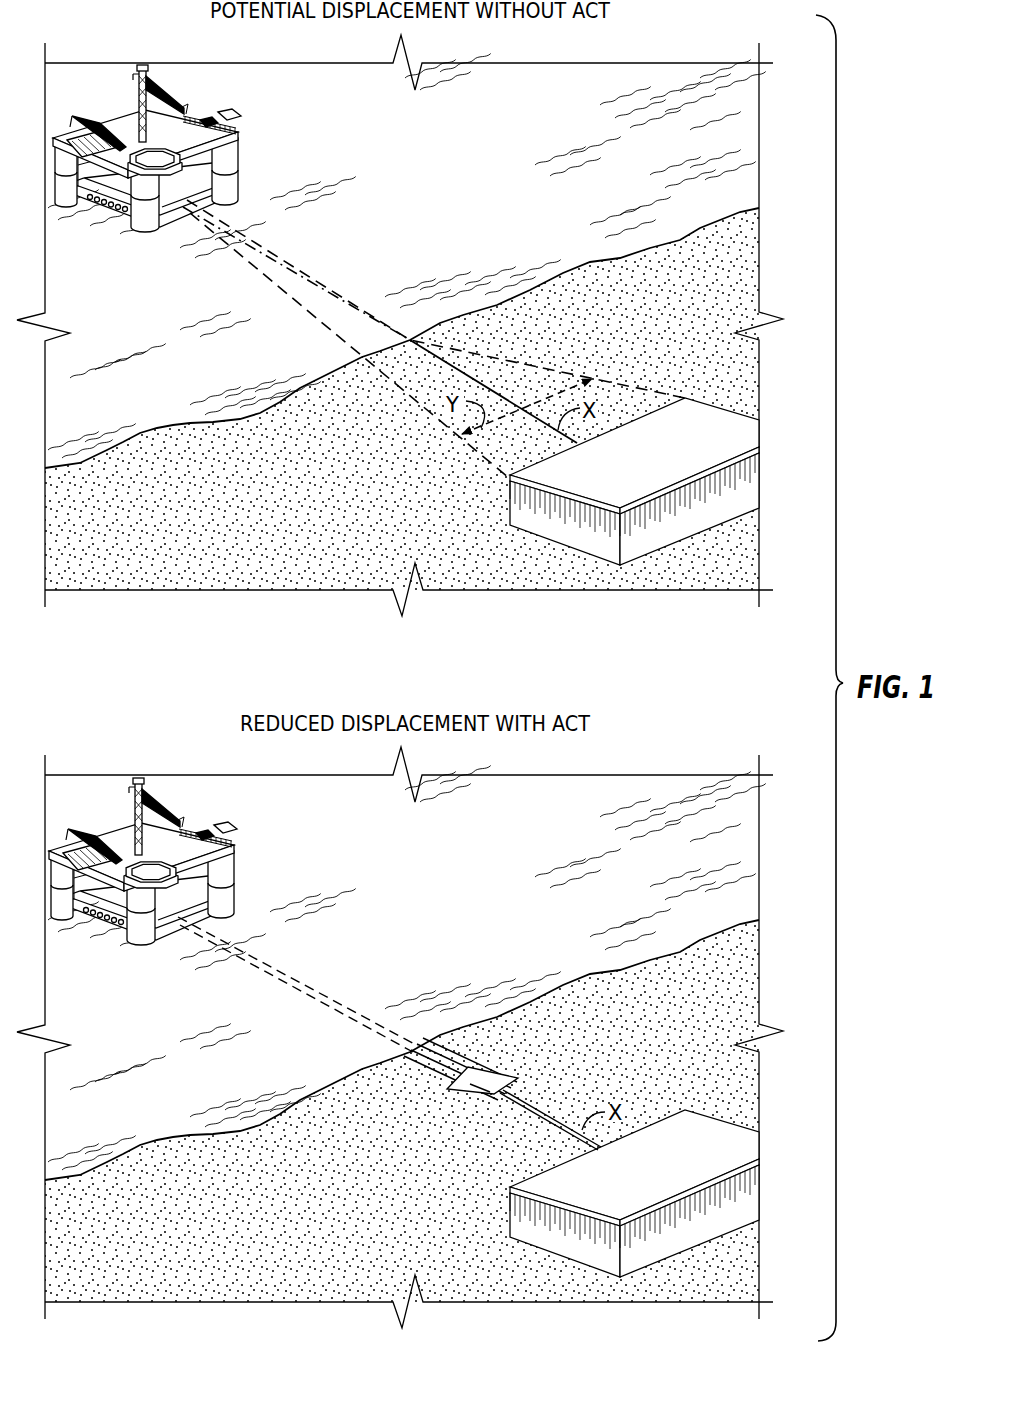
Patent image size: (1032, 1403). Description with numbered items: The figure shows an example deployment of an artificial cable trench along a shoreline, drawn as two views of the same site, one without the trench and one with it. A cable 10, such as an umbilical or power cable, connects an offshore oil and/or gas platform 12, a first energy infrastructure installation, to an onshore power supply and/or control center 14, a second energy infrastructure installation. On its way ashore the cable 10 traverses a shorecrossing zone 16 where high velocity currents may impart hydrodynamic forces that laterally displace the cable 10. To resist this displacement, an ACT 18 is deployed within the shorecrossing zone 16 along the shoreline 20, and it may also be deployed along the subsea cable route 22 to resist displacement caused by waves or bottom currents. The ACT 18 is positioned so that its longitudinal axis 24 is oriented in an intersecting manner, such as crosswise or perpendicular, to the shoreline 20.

The cable 10 is at (412, 340).
The offshore oil and/or gas platform 12 is at (231, 97).
The power supply and/or control center 14 is at (657, 466).
The shorecrossing zone 16 is at (578, 342).
The artificial cable trench (ACT) 18 is at (500, 1074).
The shoreline 20 is at (737, 270).
The subsea cable route 22 is at (308, 985).
The longitudinal axis 24 is at (477, 1078).